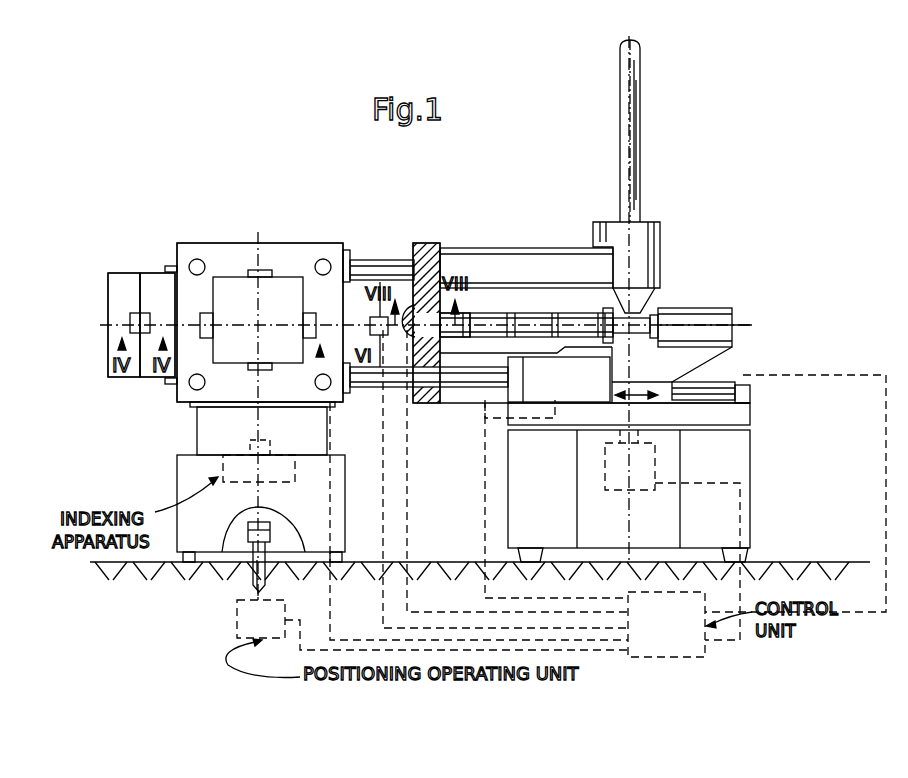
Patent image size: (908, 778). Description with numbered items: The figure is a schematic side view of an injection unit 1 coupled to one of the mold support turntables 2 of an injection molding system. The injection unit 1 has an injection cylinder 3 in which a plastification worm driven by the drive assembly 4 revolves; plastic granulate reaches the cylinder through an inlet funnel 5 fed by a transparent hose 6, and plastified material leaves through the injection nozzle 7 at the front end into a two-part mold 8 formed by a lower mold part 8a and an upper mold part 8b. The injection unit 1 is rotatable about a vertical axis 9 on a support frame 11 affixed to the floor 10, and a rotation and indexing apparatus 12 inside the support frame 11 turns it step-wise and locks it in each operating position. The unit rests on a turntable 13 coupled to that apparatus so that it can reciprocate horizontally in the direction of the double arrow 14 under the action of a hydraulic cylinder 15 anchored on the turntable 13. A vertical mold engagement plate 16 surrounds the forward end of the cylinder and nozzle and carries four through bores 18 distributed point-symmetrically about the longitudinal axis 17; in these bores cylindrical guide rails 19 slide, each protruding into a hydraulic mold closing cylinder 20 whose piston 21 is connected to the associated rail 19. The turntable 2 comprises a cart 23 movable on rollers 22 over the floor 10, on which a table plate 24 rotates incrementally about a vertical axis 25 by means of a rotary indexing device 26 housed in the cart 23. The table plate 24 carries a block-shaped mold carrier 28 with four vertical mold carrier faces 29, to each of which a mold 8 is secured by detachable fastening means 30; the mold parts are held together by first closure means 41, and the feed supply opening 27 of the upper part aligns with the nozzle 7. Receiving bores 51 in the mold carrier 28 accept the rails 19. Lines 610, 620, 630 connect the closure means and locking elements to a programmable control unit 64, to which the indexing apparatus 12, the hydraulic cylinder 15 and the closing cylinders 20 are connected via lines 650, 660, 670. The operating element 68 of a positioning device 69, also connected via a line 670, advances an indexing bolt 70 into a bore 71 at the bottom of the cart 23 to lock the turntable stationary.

The injection unit 1 is at (705, 256).
The mold support turntable 2 is at (230, 243).
The injection cylinder 3 is at (490, 312).
The drive assembly 4 is at (700, 320).
The inlet funnel 5 is at (655, 240).
The transparent hose 6 is at (627, 135).
The injection nozzle 7 is at (426, 243).
The two-part mold 8 is at (140, 377).
The lower mold part 8a is at (135, 275).
The upper mold part 8b is at (108, 292).
The vertical axis 9 is at (630, 100).
The floor 10 is at (780, 570).
The support frame 11 is at (740, 470).
The rotation and indexing apparatus 12 is at (648, 468).
The turntable 13 is at (740, 418).
The double arrow 14 is at (636, 395).
The hydraulic cylinder 15 is at (706, 394).
The mold engagement plate 16 is at (430, 300).
The longitudinal axis 17 is at (745, 322).
The through bores 18 is at (427, 403).
The guide rails 19 is at (372, 260).
The hydraulic mold closing cylinder 20 is at (470, 403).
The piston 21 is at (523, 380).
The rollers 22 is at (190, 565).
The cart 23 is at (177, 482).
The table plate 24 is at (200, 440).
The vertical axis 25 is at (262, 305).
The rotary indexing device 26 is at (235, 478).
The feed supply opening 27 is at (415, 330).
The mold carrier 28 is at (240, 245).
The mold carrier faces 29 is at (170, 265).
The detachable fastening means 30 is at (150, 275).
The first closure means 41 is at (130, 323).
The receiving bores 51 is at (195, 262).
The programmable control unit 64 is at (705, 652).
The operating element 68 is at (242, 620).
The positioning device 69 is at (246, 572).
The indexing bolt 70 is at (266, 548).
The bore 71 is at (270, 527).
The line 610 is at (383, 590).
The line 620 is at (415, 606).
The line 630 is at (330, 598).
The line 650 is at (742, 520).
The line 660 is at (886, 445).
The line 670 is at (485, 522).